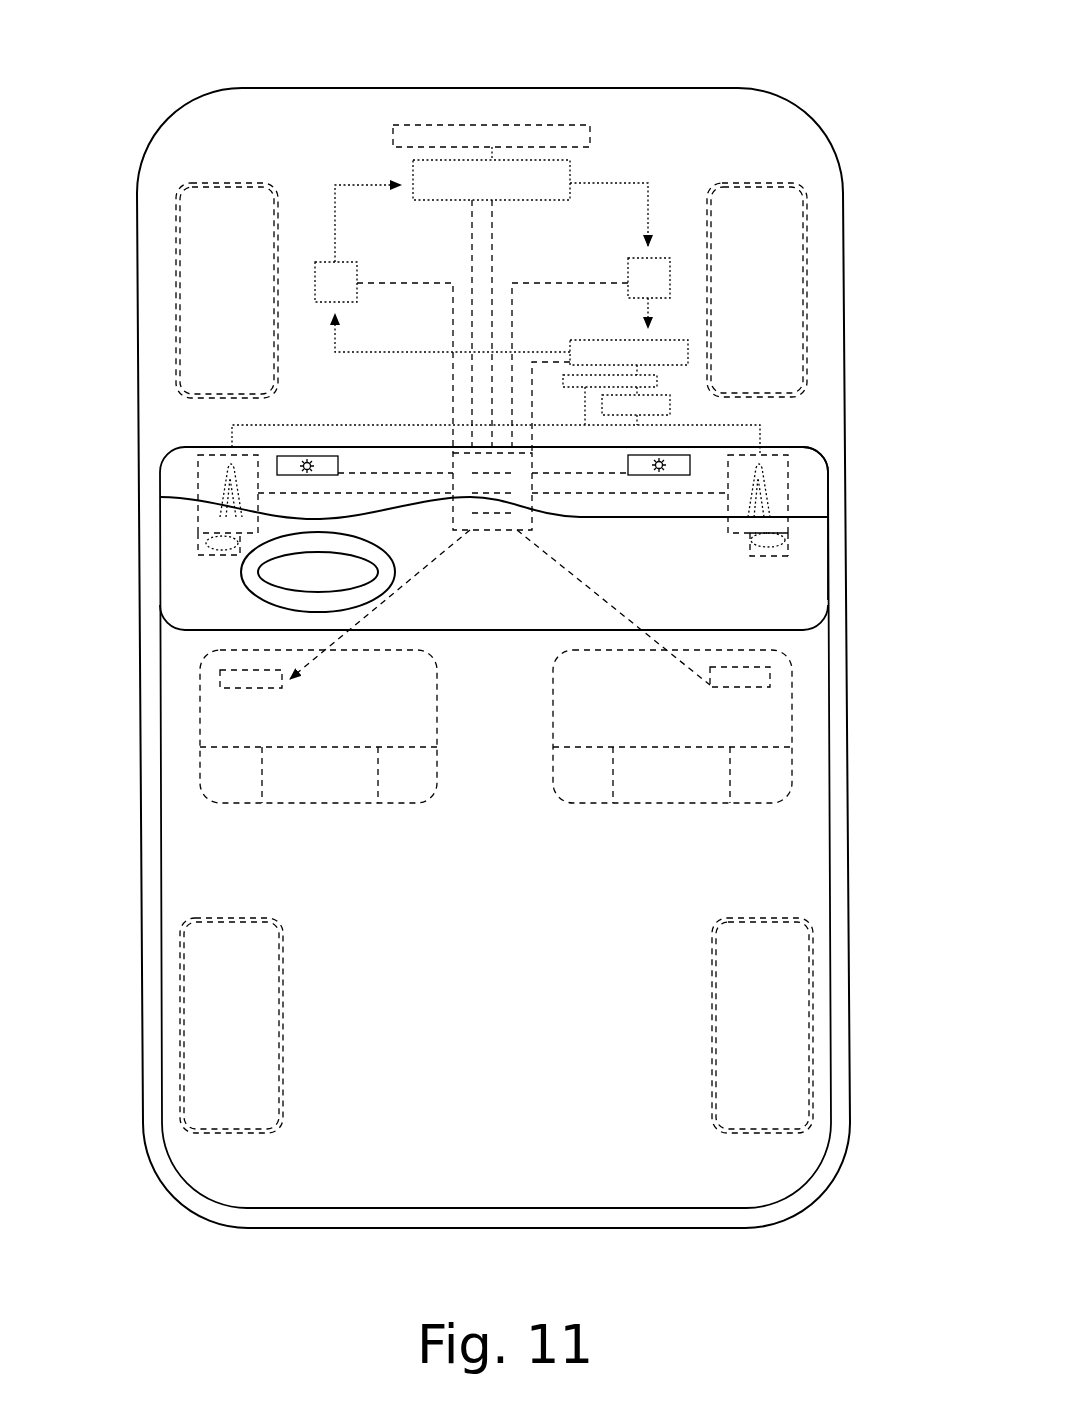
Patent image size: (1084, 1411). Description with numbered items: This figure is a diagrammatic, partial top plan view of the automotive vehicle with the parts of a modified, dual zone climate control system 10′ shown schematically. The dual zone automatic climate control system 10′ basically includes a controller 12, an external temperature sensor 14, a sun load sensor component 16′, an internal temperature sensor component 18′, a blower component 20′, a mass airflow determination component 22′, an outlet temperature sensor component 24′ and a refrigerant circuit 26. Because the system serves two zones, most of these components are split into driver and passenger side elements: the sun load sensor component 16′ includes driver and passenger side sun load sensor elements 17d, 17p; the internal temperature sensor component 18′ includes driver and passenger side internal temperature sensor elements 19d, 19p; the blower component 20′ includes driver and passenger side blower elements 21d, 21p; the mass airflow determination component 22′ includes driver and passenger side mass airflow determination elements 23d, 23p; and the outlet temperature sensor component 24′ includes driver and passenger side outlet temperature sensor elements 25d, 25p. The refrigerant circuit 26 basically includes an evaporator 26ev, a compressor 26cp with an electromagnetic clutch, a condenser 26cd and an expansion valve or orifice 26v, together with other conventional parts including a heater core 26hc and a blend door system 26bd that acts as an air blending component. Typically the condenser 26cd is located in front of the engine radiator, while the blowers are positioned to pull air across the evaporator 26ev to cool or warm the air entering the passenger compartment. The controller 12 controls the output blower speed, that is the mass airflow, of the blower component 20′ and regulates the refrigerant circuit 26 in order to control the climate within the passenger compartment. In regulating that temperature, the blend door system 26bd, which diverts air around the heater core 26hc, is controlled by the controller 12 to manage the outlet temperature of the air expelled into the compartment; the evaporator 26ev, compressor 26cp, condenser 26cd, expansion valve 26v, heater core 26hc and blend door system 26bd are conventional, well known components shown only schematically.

The dual zone automatic climate control system 10′ is at (566, 531).
The controller 12 is at (495, 530).
The external temperature sensor 14 is at (410, 125).
The sun load sensor component 16′ is at (340, 445).
The driver side sun load sensor element 17d is at (295, 455).
The passenger side sun load sensor element 17p is at (657, 475).
The internal temperature sensor component 18′ is at (780, 664).
The driver side internal temperature sensor element 19d is at (240, 690).
The passenger side internal temperature sensor element 19p is at (770, 687).
The blower component 20′ is at (792, 446).
The driver side blower element 21d is at (198, 473).
The passenger side blower element 21p is at (788, 463).
The mass airflow determination component 22′ is at (812, 549).
The driver side mass airflow determination element 23d is at (205, 548).
The passenger side mass airflow determination element 23p is at (778, 560).
The outlet temperature sensor component 24′ is at (795, 527).
The driver side outlet temperature sensor element 25d is at (222, 552).
The passenger side outlet temperature sensor element 25p is at (765, 558).
The refrigerant circuit 26 is at (499, 230).
The expansion valve or orifice 26v is at (315, 262).
The condenser 26cd is at (570, 165).
The compressor 26cp is at (628, 270).
The evaporator 26ev is at (597, 340).
The blend door system 26bd is at (657, 377).
The heater core 26hc is at (673, 403).